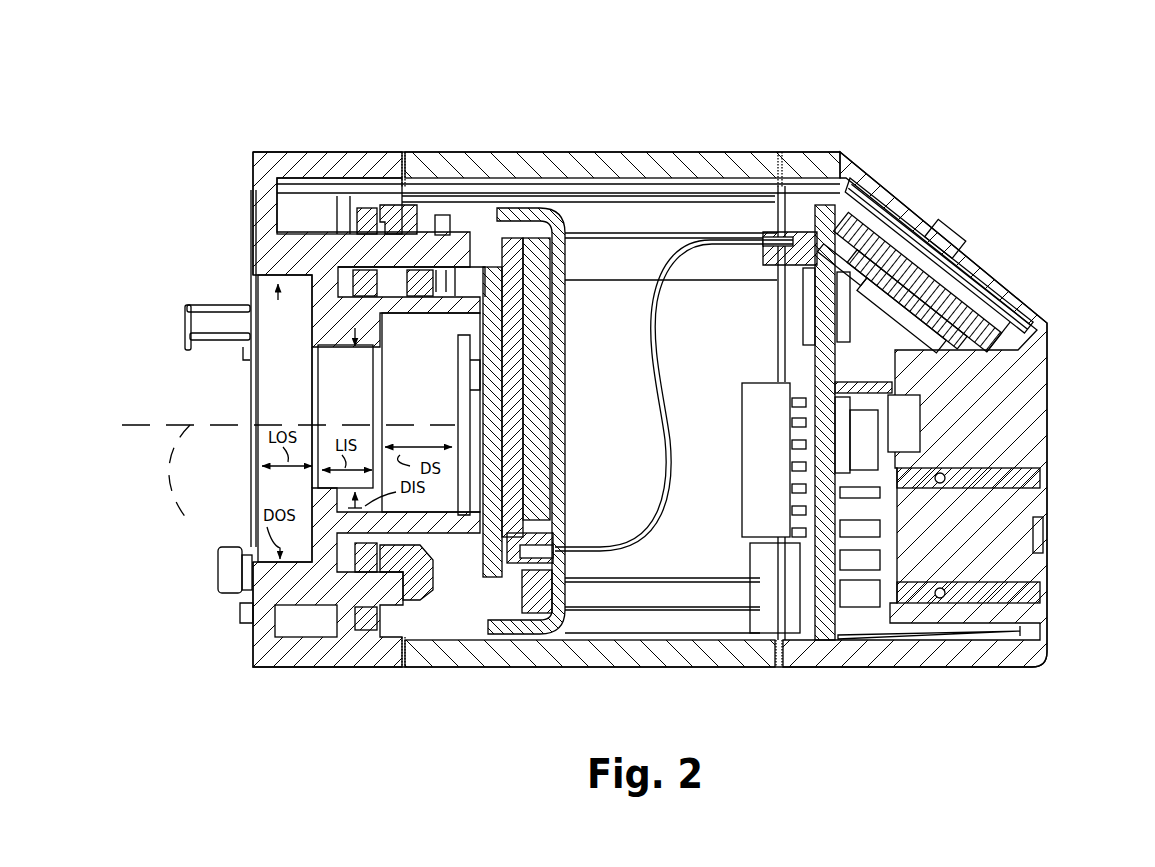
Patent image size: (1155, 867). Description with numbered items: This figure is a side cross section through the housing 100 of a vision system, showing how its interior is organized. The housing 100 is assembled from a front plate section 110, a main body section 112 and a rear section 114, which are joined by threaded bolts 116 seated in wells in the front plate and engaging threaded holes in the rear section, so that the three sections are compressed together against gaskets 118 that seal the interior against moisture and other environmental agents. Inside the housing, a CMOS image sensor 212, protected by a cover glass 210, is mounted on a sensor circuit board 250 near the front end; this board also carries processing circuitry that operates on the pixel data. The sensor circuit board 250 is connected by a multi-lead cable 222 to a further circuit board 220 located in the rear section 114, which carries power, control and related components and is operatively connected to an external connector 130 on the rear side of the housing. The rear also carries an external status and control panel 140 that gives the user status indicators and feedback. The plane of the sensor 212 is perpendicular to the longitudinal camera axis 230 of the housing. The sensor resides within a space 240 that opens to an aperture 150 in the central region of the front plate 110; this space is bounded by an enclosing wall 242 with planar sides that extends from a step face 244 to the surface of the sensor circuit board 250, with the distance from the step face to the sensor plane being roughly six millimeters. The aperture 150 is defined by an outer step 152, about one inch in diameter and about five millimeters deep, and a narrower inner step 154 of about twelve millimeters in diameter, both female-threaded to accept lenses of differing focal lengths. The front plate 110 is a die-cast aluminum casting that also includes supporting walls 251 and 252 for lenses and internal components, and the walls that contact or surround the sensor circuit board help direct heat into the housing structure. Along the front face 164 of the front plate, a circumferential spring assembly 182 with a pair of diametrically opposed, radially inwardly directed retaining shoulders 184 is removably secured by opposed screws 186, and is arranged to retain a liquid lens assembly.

The housing 100 is at (566, 148).
The front plate section 110 is at (320, 149).
The main body section 112 is at (639, 162).
The rear section 114 is at (850, 176).
The threaded bolts 116 is at (670, 207).
The gaskets 118 is at (779, 670).
The external connector 130 is at (1042, 497).
The external status and control panel 140 is at (931, 221).
The aperture 150 is at (358, 393).
The outer step 152 is at (300, 292).
The inner step 154 is at (360, 358).
The front face 164 is at (246, 615).
The circumferential spring assembly 182 is at (248, 359).
The retaining shoulders 184 is at (182, 322).
The screws 186 is at (227, 578).
The cover glass 210 is at (460, 397).
The image sensor 212 is at (480, 432).
The circuit board 220 is at (852, 214).
The multi-lead cable 222 is at (657, 383).
The longitudinal axis 230 is at (288, 486).
The space 240 is at (414, 366).
The enclosing wall 242 is at (467, 282).
The step face 244 is at (390, 328).
The sensor circuit board 250 is at (498, 323).
The supporting wall 251 is at (373, 240).
The supporting wall 252 is at (354, 151).